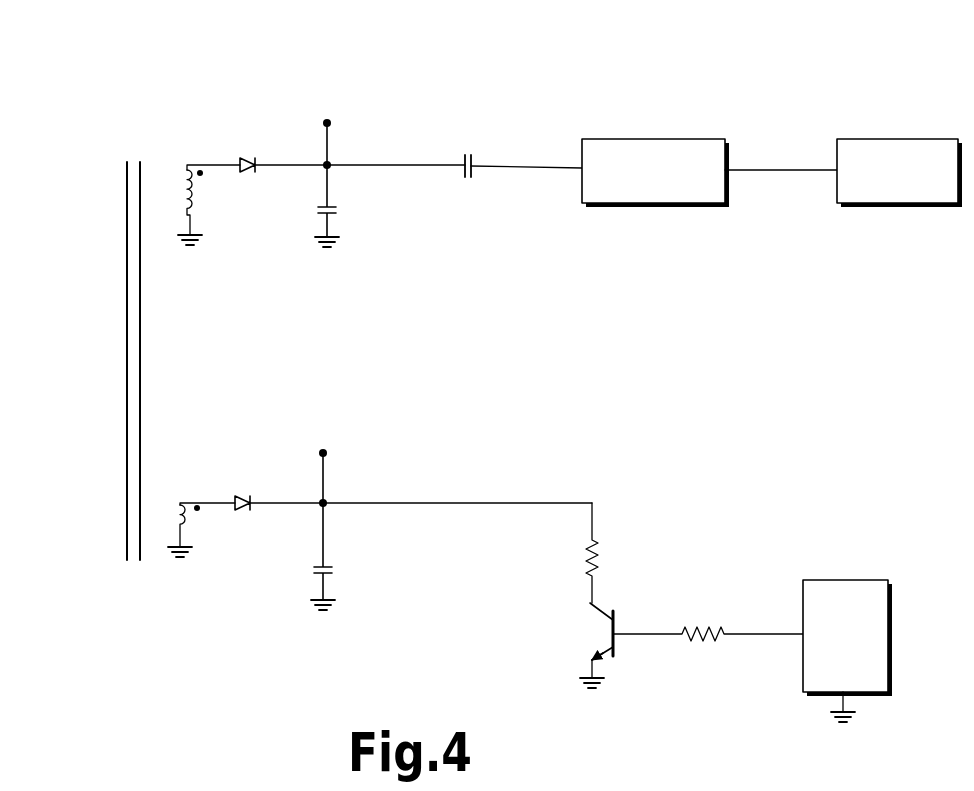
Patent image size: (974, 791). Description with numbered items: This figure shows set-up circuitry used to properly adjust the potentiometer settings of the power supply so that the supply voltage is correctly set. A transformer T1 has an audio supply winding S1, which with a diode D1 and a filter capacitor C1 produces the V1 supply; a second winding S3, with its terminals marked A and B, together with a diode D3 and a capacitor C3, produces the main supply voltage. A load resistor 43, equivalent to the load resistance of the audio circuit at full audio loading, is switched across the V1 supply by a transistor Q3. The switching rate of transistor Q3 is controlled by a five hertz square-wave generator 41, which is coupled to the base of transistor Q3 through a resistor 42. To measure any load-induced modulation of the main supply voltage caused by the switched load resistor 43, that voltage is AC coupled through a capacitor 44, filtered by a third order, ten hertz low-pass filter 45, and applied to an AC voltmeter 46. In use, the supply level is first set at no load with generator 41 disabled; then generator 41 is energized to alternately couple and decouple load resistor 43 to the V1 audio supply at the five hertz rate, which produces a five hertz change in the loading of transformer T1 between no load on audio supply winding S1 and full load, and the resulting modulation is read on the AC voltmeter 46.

The transformer T1 is at (132, 157).
The coil terminal A is at (176, 177).
The coil terminal B is at (178, 198).
The sense coil S3 is at (194, 200).
The diode D3 is at (248, 172).
The filter capacitor C3 is at (337, 211).
The capacitor 44 is at (471, 153).
The third order, 10 hertz low-pass filter 45 is at (721, 139).
The AC voltmeter 46 is at (948, 139).
The audio supply winding S1 is at (187, 520).
The diode D1 is at (243, 510).
The V1 supply V1 is at (343, 456).
The filter capacitor C1 is at (333, 571).
The load resistor 43 is at (596, 548).
The transistor Q3 is at (611, 629).
The resistor 42 is at (717, 632).
The 5 hertz square-wave generator 41 is at (888, 623).